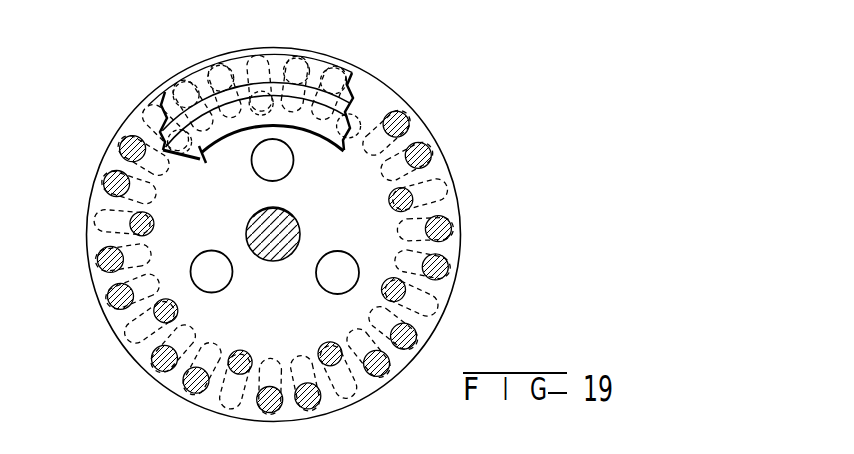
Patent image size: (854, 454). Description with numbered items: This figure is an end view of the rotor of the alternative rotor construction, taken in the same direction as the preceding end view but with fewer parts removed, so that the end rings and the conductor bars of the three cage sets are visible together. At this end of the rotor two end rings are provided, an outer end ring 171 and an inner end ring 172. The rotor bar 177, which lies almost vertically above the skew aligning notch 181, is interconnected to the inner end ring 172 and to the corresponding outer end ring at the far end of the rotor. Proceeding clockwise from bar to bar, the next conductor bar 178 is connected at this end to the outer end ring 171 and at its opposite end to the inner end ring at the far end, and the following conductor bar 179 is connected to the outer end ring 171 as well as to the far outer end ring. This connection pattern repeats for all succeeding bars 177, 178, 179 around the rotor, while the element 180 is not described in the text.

The outer end ring 171 is at (236, 62).
The inner end ring 172 is at (203, 160).
The rotor bar 177 is at (342, 121).
The conductor bar 178 is at (300, 62).
The conductor bar 179 is at (332, 71).
The hub 180 is at (300, 228).
The skew aligning notch 181 is at (268, 209).